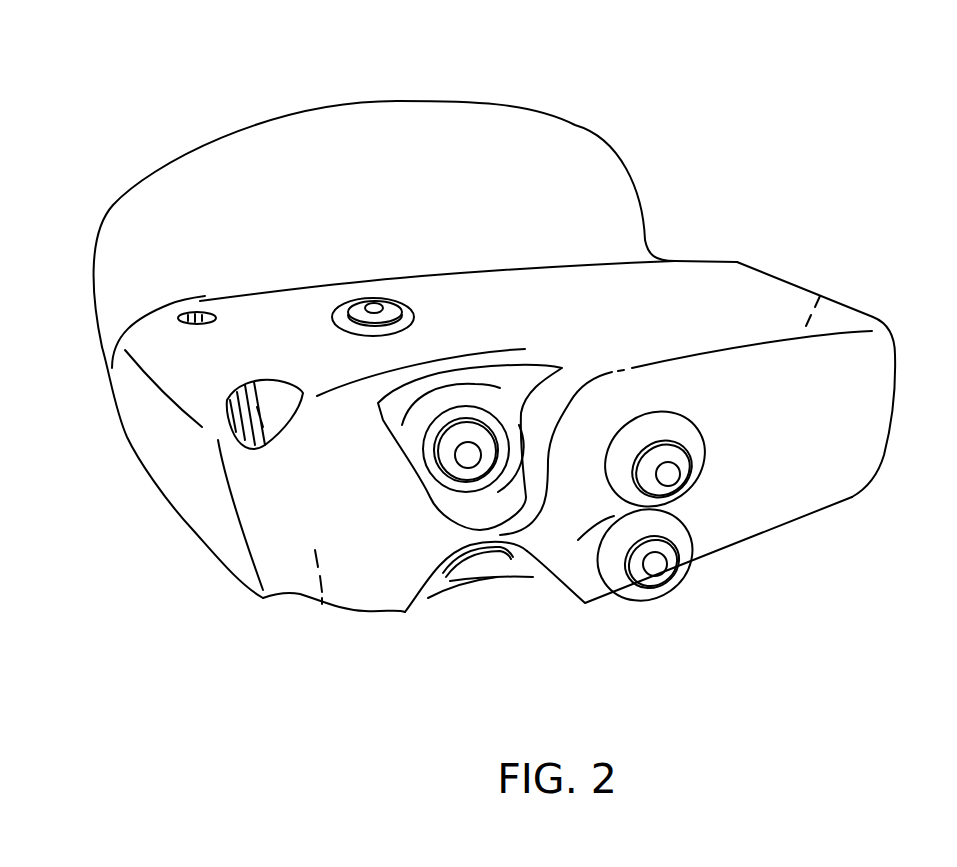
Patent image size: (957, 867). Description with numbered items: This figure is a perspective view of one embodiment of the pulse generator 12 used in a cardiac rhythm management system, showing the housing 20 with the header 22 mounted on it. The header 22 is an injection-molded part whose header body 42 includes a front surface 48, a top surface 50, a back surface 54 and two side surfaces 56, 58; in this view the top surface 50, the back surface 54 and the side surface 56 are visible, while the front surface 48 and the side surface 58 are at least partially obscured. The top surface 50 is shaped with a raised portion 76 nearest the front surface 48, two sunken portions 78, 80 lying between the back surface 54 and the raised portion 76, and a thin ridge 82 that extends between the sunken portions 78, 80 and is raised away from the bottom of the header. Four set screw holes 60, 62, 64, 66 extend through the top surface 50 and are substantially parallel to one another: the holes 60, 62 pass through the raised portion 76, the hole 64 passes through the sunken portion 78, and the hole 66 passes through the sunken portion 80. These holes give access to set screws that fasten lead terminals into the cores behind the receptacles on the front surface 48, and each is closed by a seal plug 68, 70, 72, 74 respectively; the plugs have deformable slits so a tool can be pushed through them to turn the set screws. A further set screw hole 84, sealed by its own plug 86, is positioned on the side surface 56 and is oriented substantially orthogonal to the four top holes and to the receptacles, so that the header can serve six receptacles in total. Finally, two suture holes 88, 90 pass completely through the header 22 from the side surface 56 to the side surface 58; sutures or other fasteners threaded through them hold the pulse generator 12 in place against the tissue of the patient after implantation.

The pulse generator 12 is at (800, 120).
The housing 20 is at (432, 101).
The header 22 is at (776, 262).
The header body 42 is at (207, 521).
The front surface 48 is at (833, 283).
The top surface 50 is at (777, 473).
The back surface 54 is at (153, 453).
The side surface 56 is at (267, 348).
The side surface 58 is at (320, 602).
The hole 60 is at (688, 479).
The hole 62 is at (672, 566).
The hole 64 is at (452, 470).
The hole 66 is at (462, 560).
The plug 68 is at (670, 477).
The plug 70 is at (654, 568).
The plug 72 is at (467, 460).
The plug 74 is at (473, 550).
The raised portion 76 is at (523, 555).
The sunken portion 78 is at (485, 398).
The sunken portion 80 is at (510, 558).
The ridge 82 is at (522, 533).
The hole 84 is at (354, 315).
The plug 86 is at (373, 304).
The suture hole 88 is at (270, 413).
The suture hole 90 is at (193, 311).